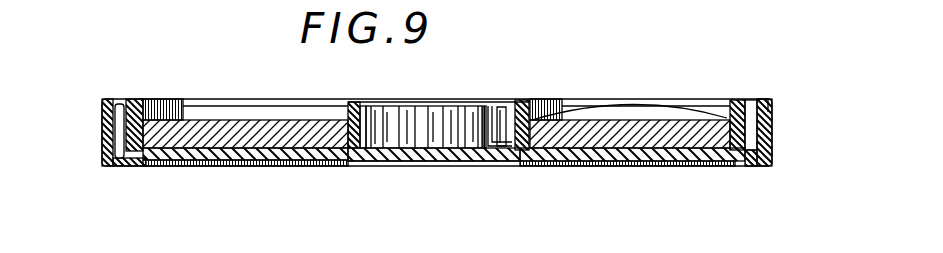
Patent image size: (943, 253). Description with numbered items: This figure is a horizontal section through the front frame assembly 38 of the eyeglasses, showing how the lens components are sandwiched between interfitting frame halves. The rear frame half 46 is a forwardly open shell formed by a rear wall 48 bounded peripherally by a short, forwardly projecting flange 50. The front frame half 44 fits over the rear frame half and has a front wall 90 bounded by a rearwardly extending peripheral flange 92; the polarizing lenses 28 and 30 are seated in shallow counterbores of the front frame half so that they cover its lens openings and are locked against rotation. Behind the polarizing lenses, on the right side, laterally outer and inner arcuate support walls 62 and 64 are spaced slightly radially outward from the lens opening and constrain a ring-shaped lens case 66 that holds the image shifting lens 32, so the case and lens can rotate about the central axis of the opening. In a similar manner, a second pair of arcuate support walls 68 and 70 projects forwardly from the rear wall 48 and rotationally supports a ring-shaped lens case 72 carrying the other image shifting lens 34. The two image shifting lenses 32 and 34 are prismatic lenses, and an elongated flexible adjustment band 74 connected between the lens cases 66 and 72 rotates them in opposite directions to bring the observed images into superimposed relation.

The front frame assembly 38 is at (100, 100).
The laterally outer arcuate support wall 62 is at (120, 150).
The image shifting lens 32 is at (180, 116).
The polarizing lens 28 is at (266, 155).
The ring-shaped lens case 66 is at (348, 117).
The laterally inner arcuate support wall 64 is at (362, 118).
The rear frame half 46 is at (461, 100).
The rear wall 48 is at (430, 103).
The front frame half 44 is at (448, 168).
The elongated flexible adjustment band 74 is at (480, 144).
The laterally inner arcuate support wall 70 is at (503, 115).
The ring-shaped lens case 72 is at (540, 108).
The image shifting lens 34 is at (605, 125).
The polarizing lens 30 is at (646, 154).
The laterally outer arcuate support wall 68 is at (752, 107).
The rearwardly extending peripheral flange 92 is at (767, 140).
The front wall 90 is at (746, 160).
The forwardly projecting flange 50 is at (767, 112).